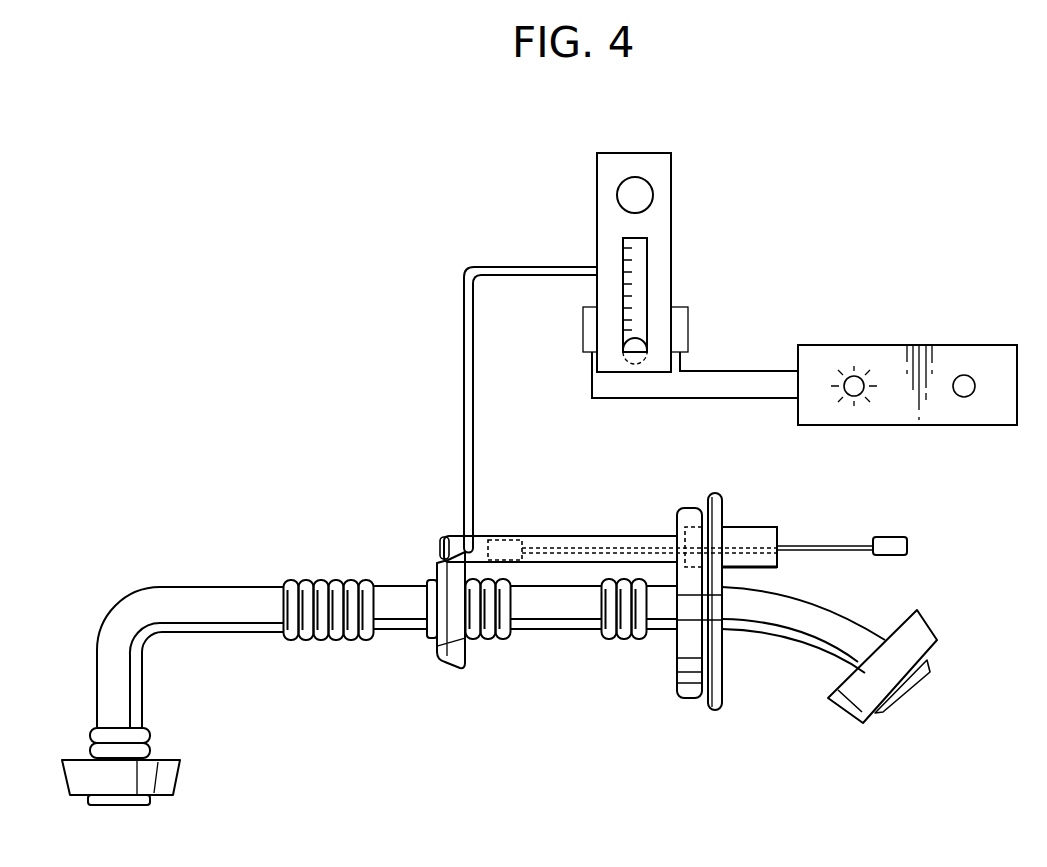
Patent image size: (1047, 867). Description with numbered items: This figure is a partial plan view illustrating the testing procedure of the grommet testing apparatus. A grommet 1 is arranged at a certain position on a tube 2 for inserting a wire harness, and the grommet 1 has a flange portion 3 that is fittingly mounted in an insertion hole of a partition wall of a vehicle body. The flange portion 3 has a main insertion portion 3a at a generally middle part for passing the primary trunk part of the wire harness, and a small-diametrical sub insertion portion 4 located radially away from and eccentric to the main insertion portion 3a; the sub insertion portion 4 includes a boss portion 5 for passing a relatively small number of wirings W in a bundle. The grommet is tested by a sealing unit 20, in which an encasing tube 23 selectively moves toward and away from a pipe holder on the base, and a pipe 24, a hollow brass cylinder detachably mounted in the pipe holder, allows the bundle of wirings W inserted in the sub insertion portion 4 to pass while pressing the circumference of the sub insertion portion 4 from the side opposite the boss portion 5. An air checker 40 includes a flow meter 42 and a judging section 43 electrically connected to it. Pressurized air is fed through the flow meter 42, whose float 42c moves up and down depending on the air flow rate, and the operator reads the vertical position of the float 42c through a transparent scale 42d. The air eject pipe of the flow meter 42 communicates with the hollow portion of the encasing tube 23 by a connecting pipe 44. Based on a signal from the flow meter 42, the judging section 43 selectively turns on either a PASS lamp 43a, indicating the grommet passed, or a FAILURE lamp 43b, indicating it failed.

The grommet 1 is at (689, 708).
The tube 2 is at (754, 612).
The flange portion 3 is at (676, 680).
The main insertion portion 3a is at (680, 597).
The sub insertion portion 4 is at (705, 463).
The boss portion 5 is at (663, 548).
The sealing unit 20 is at (515, 519).
The encasing tube 23 is at (540, 535).
The pipe 24 is at (742, 527).
The air checker 40 is at (565, 220).
The flow meter 42 is at (658, 253).
The float 42c is at (635, 338).
The scale 42d is at (642, 298).
The judging section 43 is at (847, 360).
The PASS lamp 43a is at (858, 393).
The FAILURE lamp 43b is at (966, 397).
The connecting pipe 44 is at (464, 358).
The wirings W is at (832, 546).